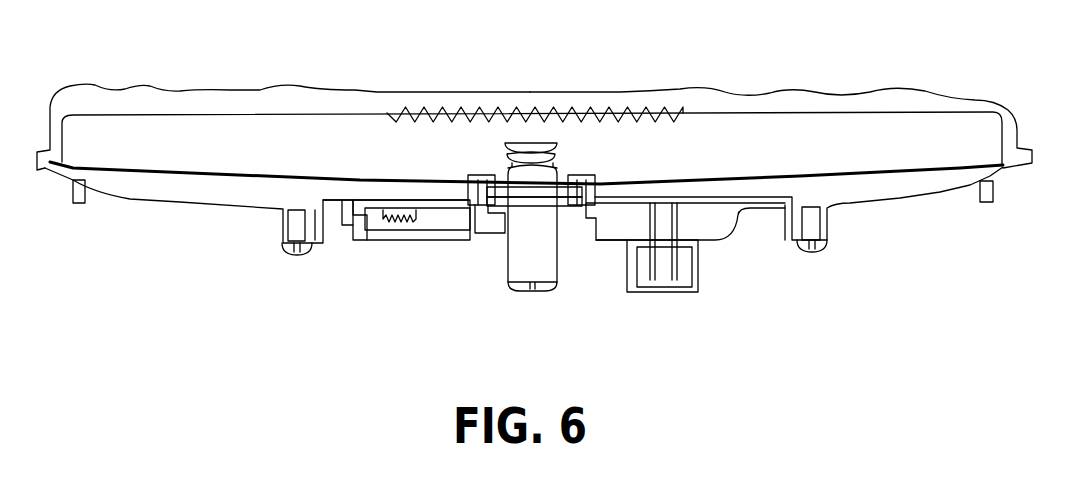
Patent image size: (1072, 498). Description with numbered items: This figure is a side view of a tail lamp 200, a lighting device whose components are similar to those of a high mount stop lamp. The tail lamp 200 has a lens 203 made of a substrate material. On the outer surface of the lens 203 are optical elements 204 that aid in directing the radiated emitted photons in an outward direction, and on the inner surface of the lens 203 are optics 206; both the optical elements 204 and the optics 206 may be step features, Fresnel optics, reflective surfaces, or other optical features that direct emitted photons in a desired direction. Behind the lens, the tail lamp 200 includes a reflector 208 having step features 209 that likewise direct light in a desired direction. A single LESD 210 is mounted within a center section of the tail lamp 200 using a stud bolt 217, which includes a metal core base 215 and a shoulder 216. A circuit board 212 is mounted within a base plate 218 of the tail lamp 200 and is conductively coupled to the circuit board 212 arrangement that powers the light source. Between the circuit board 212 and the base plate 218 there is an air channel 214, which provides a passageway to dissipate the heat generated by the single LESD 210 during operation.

The tail lamp 200 is at (100, 55).
The lens 203 is at (195, 98).
The optical elements 204 is at (903, 85).
The optics 206 is at (440, 105).
The reflector 208 is at (905, 174).
The step features 209 is at (828, 165).
The single LESD 210 is at (531, 137).
The circuit board 212 is at (433, 214).
The air channel 214 is at (462, 222).
The metal core base 215 is at (566, 200).
The shoulder 216 is at (498, 207).
The stud bolt 217 is at (532, 295).
The base plate 218 is at (441, 250).